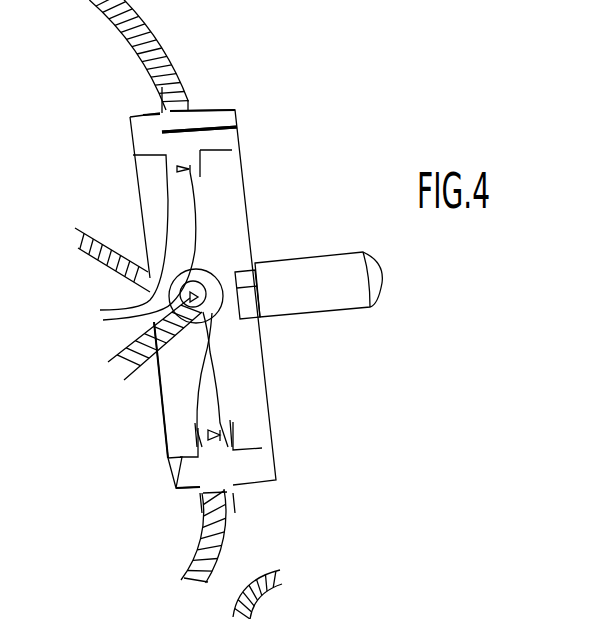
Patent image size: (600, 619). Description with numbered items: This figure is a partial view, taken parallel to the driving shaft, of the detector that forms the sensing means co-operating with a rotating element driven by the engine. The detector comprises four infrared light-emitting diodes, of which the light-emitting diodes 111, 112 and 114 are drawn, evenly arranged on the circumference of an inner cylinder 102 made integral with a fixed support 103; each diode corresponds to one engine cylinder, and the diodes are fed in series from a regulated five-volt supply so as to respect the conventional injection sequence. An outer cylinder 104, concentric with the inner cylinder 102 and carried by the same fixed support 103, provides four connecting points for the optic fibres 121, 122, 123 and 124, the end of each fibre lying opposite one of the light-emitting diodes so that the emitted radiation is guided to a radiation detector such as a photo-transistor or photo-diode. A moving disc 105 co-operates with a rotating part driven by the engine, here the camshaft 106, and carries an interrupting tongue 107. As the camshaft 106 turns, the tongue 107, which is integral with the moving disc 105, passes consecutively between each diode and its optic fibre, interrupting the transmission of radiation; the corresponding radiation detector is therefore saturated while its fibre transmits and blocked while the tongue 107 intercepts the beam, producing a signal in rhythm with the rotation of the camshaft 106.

The cylinder 102 is at (178, 492).
The fixed support 103 is at (152, 444).
The outer cylinder 104 is at (214, 104).
The moving disc 105 is at (284, 404).
The camshaft 106 is at (306, 275).
The interrupting tongue 107 is at (228, 136).
The light-emitting diode 111 is at (192, 185).
The light-emitting diode 112 is at (203, 302).
The light-emitting diode 114 is at (223, 427).
The optic fibre 121 is at (133, 46).
The optic fibre 122 is at (123, 370).
The optic fibre 123 is at (103, 230).
The optic fibre 124 is at (200, 578).